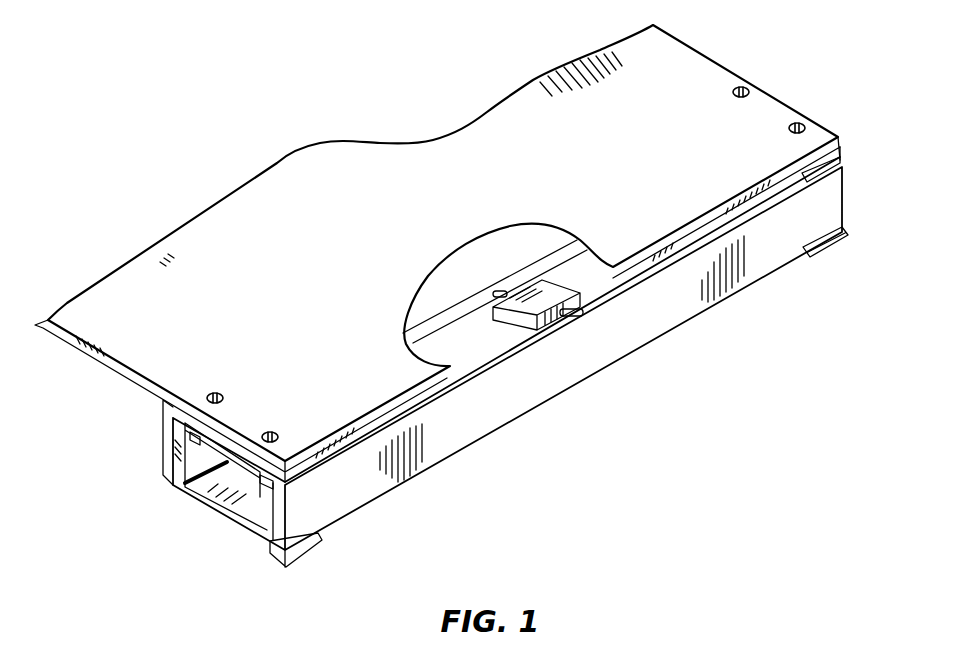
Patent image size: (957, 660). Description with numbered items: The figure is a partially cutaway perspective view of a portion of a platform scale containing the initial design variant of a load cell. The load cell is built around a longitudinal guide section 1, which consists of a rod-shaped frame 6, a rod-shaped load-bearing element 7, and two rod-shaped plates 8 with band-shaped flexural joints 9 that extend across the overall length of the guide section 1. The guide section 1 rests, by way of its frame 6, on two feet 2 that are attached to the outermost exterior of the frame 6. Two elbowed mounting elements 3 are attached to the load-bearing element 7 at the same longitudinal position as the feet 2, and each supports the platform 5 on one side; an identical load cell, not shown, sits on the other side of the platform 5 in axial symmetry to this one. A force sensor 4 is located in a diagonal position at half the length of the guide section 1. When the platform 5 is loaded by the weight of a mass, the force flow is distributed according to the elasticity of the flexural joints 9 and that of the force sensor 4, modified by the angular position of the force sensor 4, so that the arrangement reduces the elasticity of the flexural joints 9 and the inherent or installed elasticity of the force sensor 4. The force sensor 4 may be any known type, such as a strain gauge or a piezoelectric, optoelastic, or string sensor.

The guide section 1 is at (493, 402).
The feet 2 is at (303, 547).
The elbowed mounting elements 3 is at (163, 423).
The force sensor 4 is at (542, 303).
The platform 5 is at (222, 253).
The frame 6 is at (280, 505).
The load-bearing element 7 is at (177, 453).
The plates 8 is at (227, 462).
The flexural joints 9 is at (190, 440).